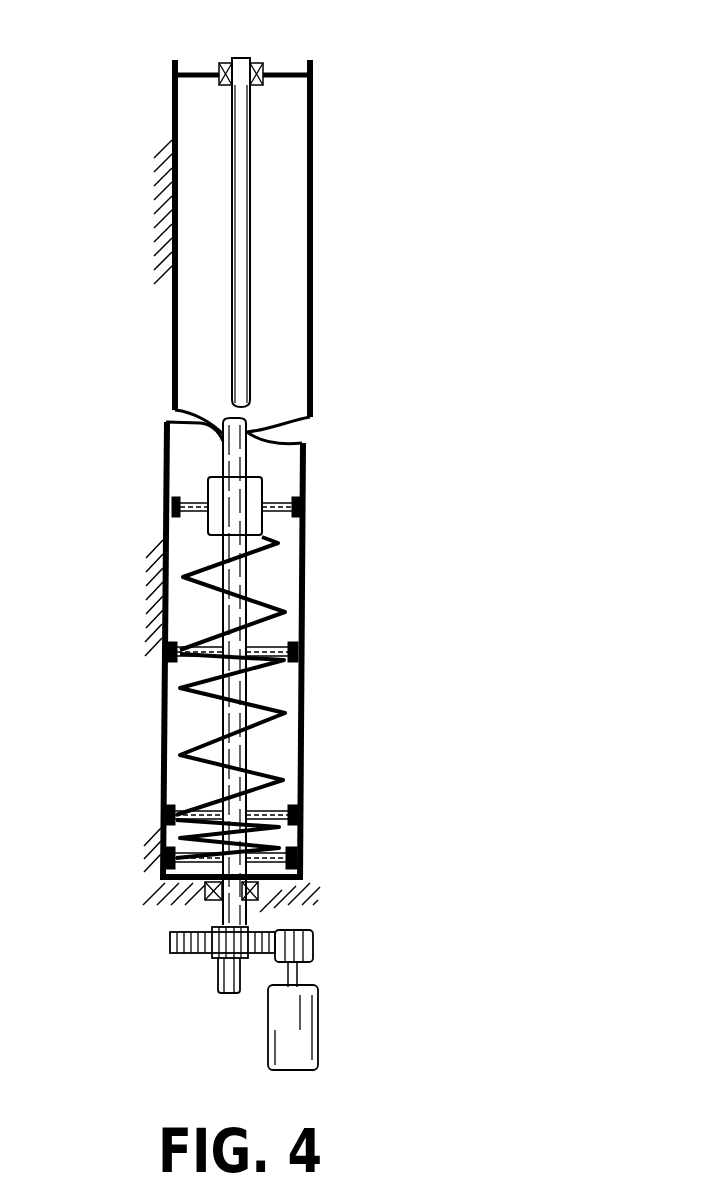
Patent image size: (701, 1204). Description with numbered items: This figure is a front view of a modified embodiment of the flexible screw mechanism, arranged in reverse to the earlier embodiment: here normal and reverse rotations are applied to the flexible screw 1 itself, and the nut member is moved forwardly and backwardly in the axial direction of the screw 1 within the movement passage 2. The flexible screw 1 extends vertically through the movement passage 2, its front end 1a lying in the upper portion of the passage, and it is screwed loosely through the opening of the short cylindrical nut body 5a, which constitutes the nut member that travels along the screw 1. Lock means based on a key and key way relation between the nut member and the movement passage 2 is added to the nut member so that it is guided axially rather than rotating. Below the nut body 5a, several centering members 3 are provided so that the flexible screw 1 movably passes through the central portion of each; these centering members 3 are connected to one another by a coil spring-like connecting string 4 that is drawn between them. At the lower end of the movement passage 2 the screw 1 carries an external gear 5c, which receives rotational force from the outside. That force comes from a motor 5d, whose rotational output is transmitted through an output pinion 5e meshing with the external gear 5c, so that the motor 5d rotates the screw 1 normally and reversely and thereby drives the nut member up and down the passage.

The flexible screw 1 is at (252, 212).
The front end 1a is at (246, 58).
The movement passage 2 is at (309, 300).
The centering members 3 is at (275, 650).
The coil spring-like connecting string 4 is at (255, 553).
The nut body 5a is at (165, 483).
The external gear 5c is at (172, 942).
The motor 5d is at (297, 1045).
The output pinion 5e is at (314, 948).